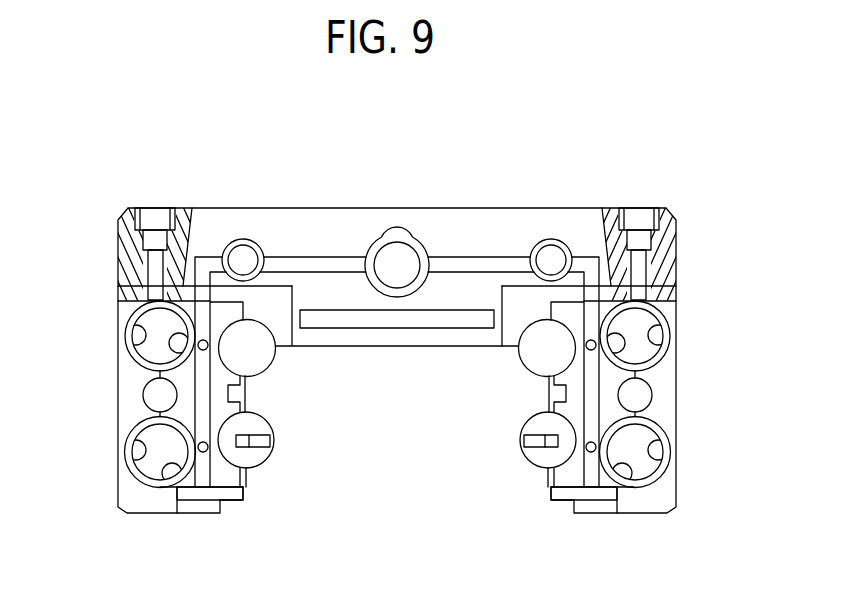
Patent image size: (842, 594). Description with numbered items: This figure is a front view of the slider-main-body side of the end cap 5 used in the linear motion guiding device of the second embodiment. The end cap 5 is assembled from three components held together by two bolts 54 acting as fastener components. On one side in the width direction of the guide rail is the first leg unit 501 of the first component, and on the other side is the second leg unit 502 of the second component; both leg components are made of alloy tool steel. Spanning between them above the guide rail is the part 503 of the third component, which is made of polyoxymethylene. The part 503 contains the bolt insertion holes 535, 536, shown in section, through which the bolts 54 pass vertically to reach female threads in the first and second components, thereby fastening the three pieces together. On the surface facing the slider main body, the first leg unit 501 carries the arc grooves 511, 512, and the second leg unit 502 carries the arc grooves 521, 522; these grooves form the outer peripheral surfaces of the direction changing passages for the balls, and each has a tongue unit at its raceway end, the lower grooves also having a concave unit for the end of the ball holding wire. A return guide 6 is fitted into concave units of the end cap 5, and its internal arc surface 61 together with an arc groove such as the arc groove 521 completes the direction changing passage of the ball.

The end cap 5 is at (510, 208).
The bolt 54 is at (143, 209).
The bolt insertion hole 535 is at (174, 207).
The bolt insertion hole 536 is at (653, 207).
The first leg unit 501 is at (140, 398).
The second leg unit 502 is at (660, 398).
The part provided above the guide rail 503 is at (418, 336).
The arc groove 511 is at (143, 345).
The arc groove 512 is at (143, 458).
The arc groove 521 is at (651, 345).
The arc groove 522 is at (651, 458).
The return guide 6 is at (173, 488).
The internal arc surface 61 is at (180, 342).